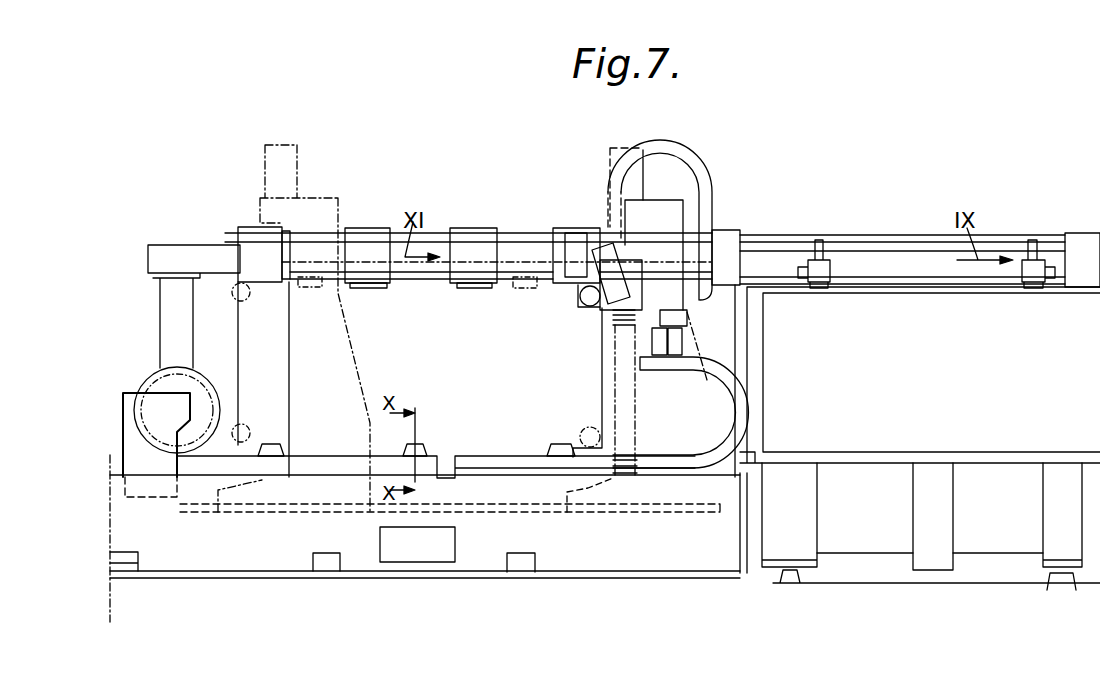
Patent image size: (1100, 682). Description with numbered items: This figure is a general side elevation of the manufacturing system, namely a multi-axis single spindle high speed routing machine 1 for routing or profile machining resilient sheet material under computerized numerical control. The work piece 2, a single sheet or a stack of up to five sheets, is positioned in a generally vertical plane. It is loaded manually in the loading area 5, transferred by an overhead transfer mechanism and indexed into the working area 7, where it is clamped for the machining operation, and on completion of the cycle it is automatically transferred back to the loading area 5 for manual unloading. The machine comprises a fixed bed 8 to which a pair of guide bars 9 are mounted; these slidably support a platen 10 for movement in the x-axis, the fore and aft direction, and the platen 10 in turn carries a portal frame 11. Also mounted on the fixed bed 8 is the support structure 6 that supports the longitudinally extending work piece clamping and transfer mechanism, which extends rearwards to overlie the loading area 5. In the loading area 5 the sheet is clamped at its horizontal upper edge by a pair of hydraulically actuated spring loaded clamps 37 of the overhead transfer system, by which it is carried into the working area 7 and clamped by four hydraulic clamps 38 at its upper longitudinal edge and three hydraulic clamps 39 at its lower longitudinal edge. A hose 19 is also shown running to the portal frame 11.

The routing machine 1 is at (741, 230).
The work piece 2 is at (235, 346).
The loading area 5 is at (847, 318).
The support structure 6 is at (773, 253).
The working area 7 is at (458, 322).
The fixed bed 8 is at (685, 480).
The guide bars 9 is at (498, 508).
The platen 10 is at (587, 493).
The portal frame 11 is at (688, 230).
The hose 19 is at (620, 150).
The spring loaded clamps 37 is at (823, 268).
The hydraulic clamps 38 is at (363, 235).
The hydraulic clamps 39 is at (405, 449).